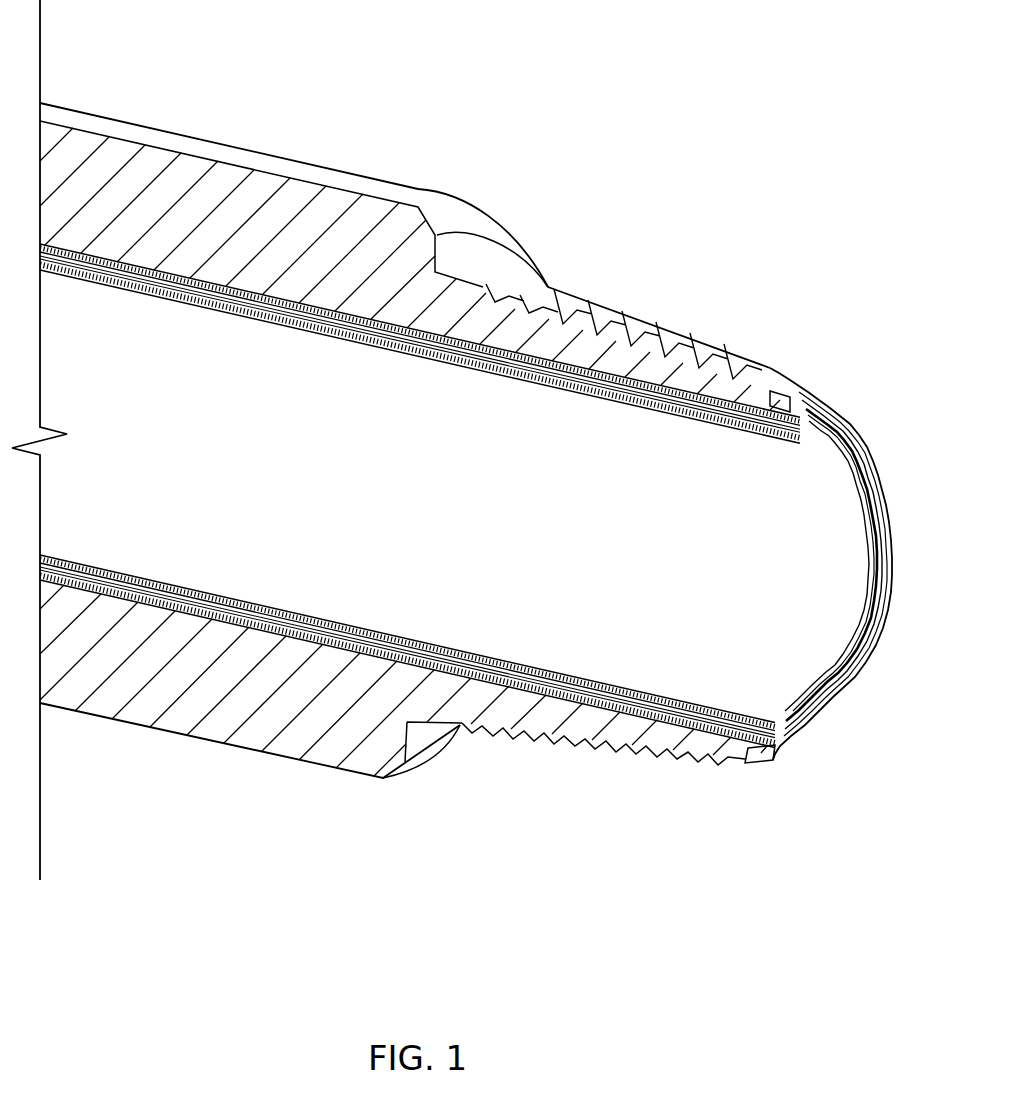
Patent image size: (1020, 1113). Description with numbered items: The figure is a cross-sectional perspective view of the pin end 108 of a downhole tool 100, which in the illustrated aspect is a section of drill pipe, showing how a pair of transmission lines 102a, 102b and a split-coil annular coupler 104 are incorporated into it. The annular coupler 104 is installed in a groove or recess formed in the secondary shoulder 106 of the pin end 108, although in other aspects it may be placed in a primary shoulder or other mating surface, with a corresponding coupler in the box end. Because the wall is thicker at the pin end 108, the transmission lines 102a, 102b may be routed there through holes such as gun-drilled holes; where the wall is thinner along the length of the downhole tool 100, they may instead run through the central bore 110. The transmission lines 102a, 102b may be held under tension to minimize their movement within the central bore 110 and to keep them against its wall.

The downhole tool 100 is at (667, 87).
The transmission line 102a is at (214, 287).
The transmission line 102b is at (228, 612).
The split-coil annular coupler 104 is at (872, 463).
The secondary shoulder 106 is at (837, 410).
The pin end 108 is at (643, 357).
The central bore 110 is at (483, 494).